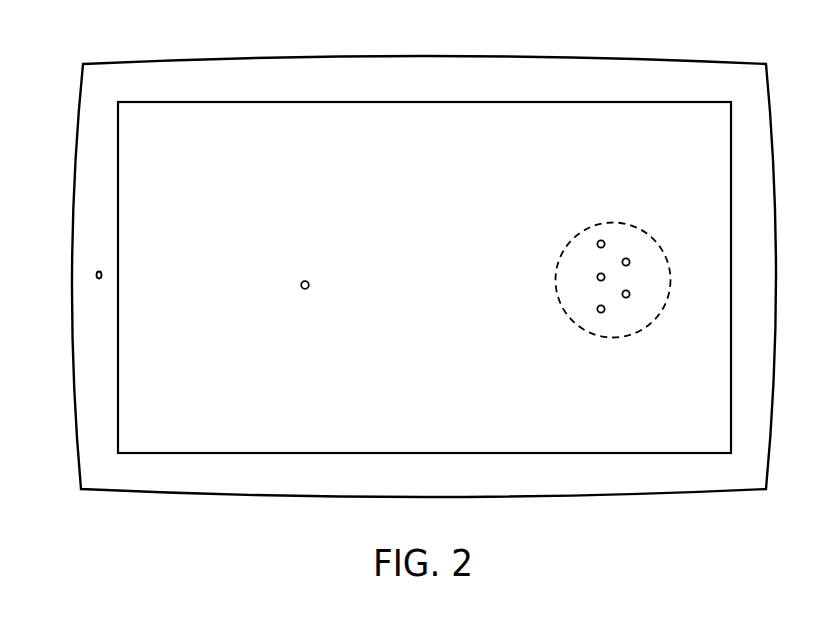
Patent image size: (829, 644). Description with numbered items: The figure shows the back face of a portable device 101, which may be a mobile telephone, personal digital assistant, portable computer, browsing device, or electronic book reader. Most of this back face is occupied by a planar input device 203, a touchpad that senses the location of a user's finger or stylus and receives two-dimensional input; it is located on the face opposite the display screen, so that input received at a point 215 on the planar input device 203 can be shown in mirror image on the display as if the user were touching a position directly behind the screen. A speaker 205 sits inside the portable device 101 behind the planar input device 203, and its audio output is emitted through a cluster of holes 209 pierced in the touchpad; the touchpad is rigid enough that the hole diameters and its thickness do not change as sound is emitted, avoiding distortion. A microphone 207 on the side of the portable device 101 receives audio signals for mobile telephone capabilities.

The portable device 101 is at (447, 80).
The planar input device 203 is at (273, 435).
The speaker 205 is at (612, 340).
The microphone 207 is at (96, 274).
The holes 209 is at (624, 258).
The point 215 is at (309, 281).